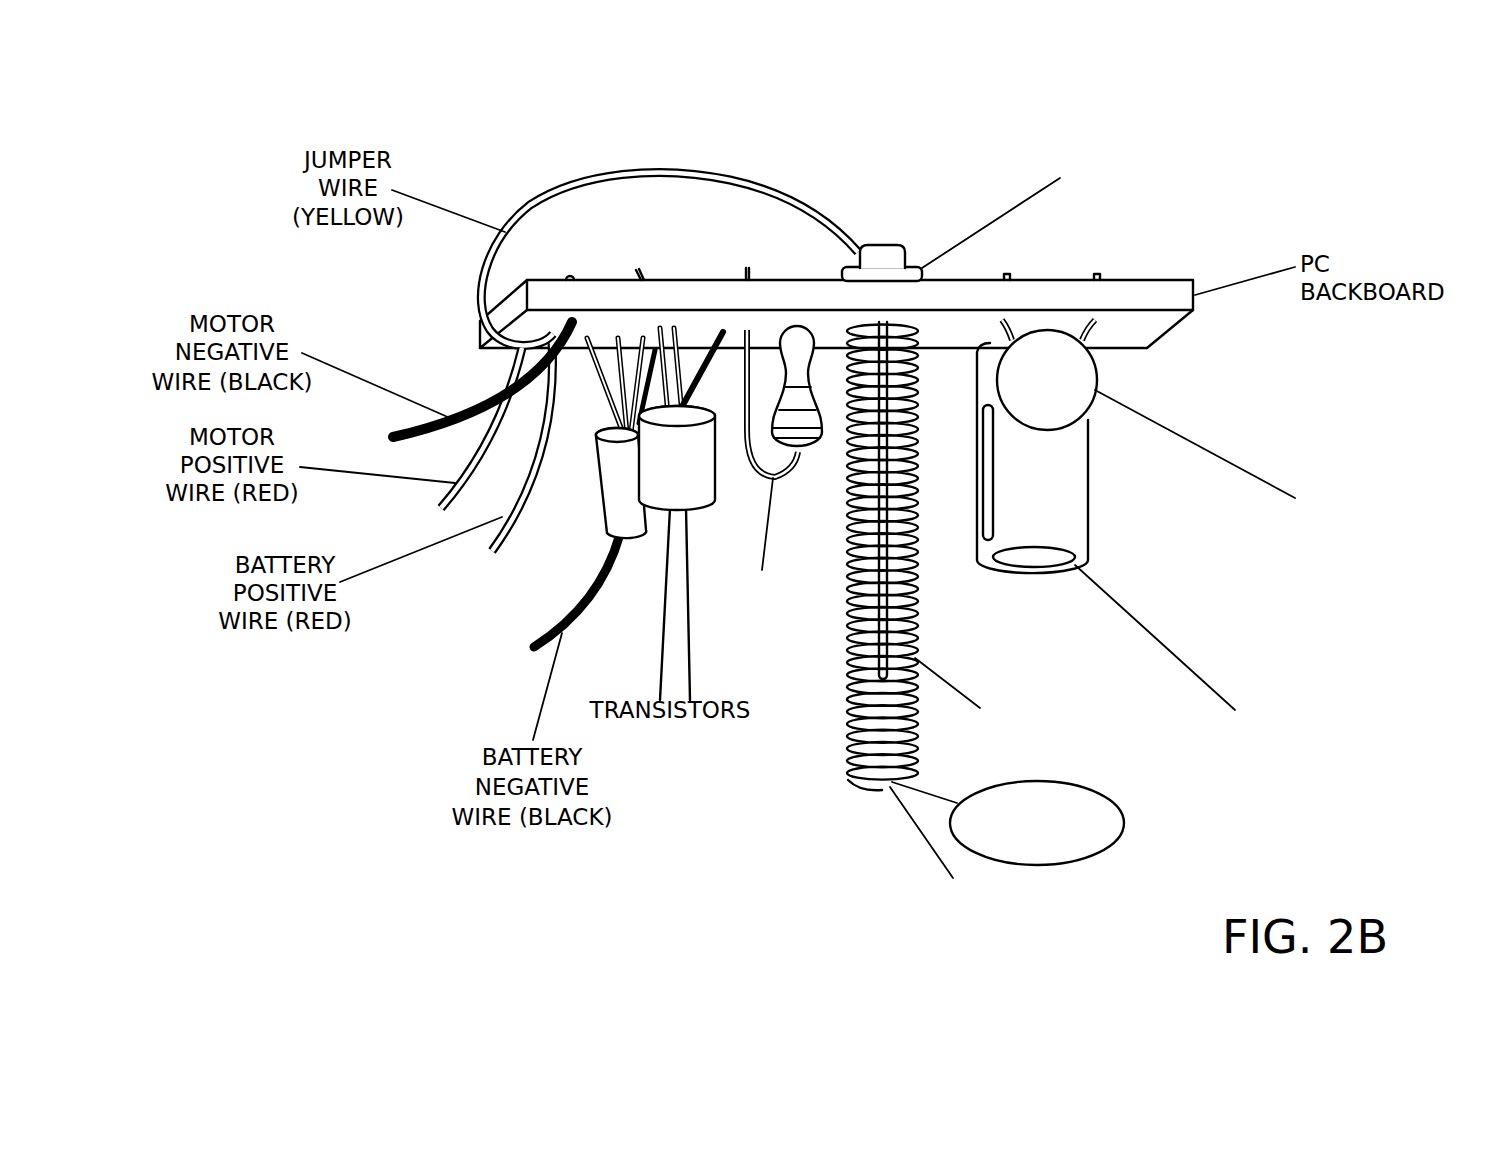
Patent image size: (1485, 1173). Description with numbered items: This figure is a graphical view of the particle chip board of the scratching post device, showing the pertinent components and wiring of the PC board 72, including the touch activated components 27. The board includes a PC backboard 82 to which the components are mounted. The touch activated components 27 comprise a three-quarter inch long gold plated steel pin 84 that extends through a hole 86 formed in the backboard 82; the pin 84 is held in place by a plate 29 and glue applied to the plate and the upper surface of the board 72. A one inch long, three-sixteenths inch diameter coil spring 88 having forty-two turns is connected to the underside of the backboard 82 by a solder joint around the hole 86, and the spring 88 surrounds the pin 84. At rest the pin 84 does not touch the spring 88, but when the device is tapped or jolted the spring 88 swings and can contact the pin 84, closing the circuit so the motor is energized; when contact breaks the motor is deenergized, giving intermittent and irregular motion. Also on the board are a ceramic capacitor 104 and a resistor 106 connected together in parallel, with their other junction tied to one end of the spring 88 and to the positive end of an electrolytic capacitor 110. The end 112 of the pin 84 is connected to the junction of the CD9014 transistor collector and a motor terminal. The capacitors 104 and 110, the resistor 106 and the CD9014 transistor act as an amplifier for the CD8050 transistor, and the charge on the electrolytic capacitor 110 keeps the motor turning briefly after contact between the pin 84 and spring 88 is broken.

The PC board 72 is at (850, 228).
The PC backboard 82 is at (1162, 280).
The plate 29 is at (905, 263).
The end of pin 112 is at (860, 252).
The resistor 106 is at (820, 443).
The touch activated components 27 is at (943, 570).
The gold plated steel pin 84 is at (912, 590).
The coil spring 88 is at (917, 636).
The hole 86 is at (920, 334).
The electrolytic capacitor 110 is at (1083, 523).
The ceramic capacitor 104 is at (1093, 367).